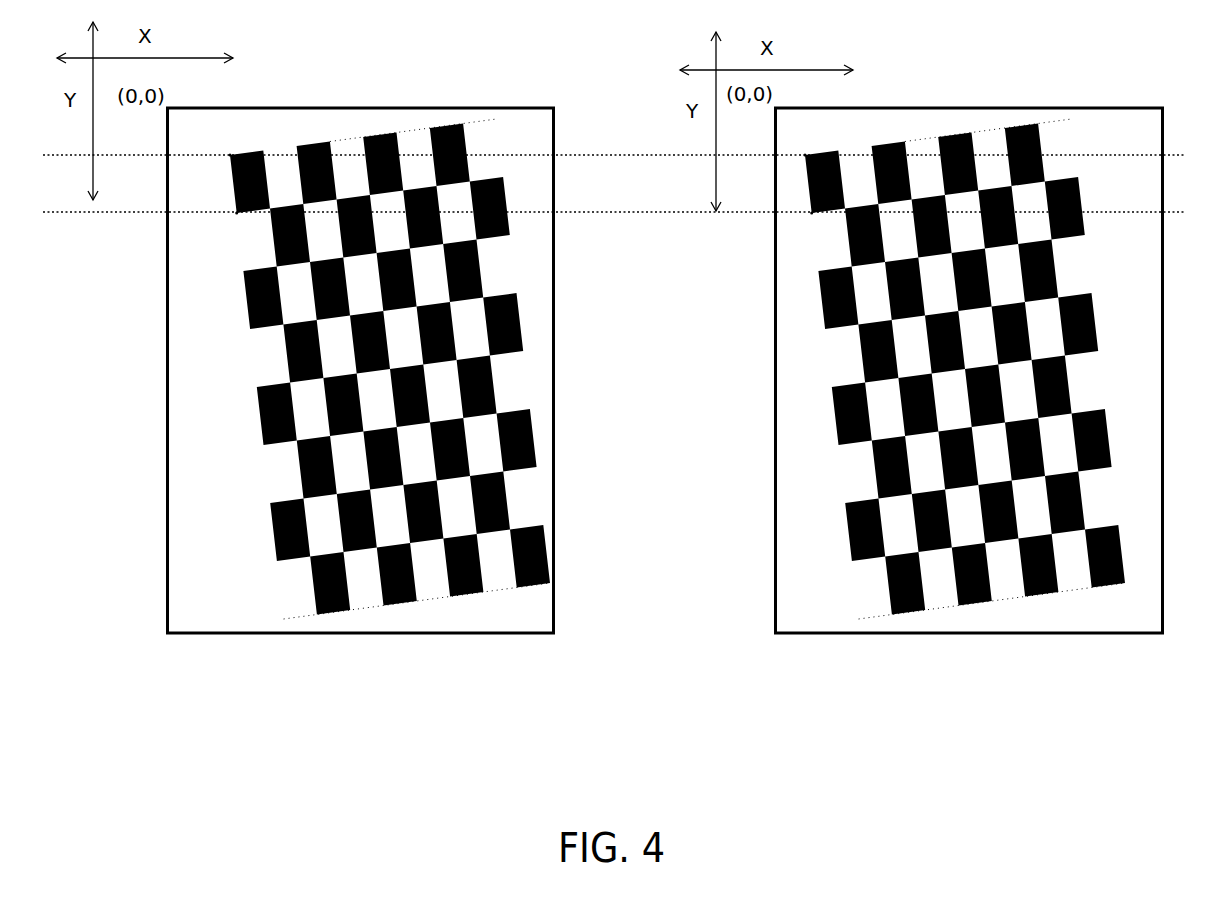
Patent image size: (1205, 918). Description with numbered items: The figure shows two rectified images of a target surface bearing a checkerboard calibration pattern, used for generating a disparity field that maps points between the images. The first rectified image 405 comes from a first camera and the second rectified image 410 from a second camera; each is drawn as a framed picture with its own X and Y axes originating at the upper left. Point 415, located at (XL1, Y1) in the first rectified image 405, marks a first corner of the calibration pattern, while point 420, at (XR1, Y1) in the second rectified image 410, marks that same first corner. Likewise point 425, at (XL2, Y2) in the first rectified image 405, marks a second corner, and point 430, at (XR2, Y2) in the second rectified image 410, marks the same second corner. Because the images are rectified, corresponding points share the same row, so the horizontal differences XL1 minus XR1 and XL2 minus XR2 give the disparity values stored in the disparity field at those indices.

The first rectified image 405 is at (485, 105).
The second rectified image 410 is at (1058, 105).
The point 415 is at (230, 156).
The point 420 is at (805, 155).
The point 425 is at (237, 213).
The point 430 is at (811, 213).